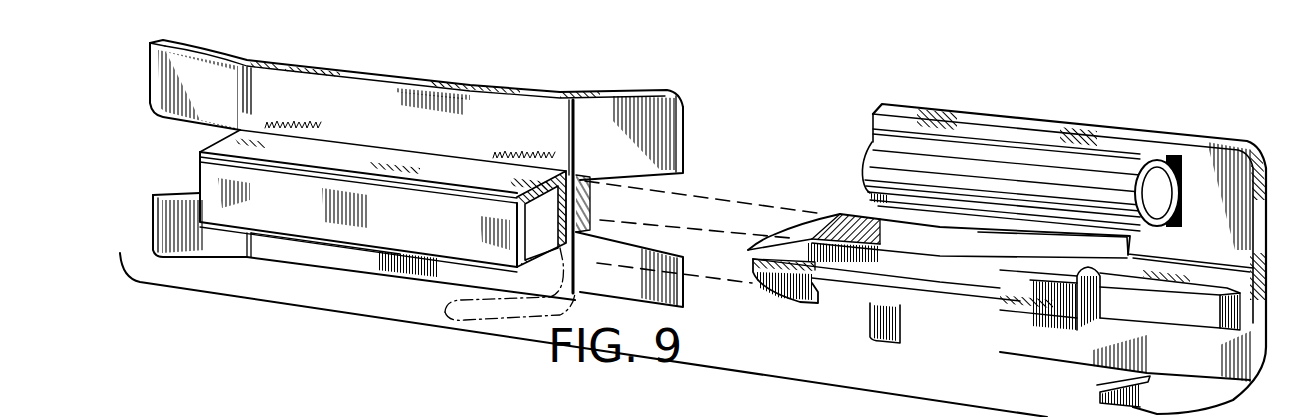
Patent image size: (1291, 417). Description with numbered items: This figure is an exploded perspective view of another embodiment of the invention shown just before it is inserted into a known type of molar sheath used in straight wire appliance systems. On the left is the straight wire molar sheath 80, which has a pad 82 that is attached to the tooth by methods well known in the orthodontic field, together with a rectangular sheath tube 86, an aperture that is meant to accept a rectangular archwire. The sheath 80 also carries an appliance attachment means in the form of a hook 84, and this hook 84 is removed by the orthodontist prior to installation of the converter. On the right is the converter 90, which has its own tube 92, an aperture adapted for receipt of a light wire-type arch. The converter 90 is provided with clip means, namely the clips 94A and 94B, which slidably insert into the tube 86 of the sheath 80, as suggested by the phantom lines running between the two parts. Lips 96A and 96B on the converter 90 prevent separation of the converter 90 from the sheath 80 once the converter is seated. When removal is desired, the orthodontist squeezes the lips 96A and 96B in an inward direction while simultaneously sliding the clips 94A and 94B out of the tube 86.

The straight wire molar sheath 80 is at (416, 171).
The pad 82 is at (373, 97).
The hook 84 is at (442, 292).
The tube 86 is at (310, 220).
The converter 90 is at (1064, 244).
The tube 92 is at (1160, 176).
The clip 94A is at (939, 272).
The clip 94B is at (899, 265).
The lip 96A is at (817, 305).
The lip 96B is at (826, 213).